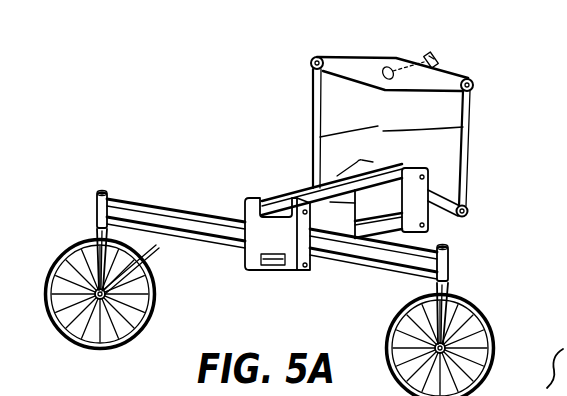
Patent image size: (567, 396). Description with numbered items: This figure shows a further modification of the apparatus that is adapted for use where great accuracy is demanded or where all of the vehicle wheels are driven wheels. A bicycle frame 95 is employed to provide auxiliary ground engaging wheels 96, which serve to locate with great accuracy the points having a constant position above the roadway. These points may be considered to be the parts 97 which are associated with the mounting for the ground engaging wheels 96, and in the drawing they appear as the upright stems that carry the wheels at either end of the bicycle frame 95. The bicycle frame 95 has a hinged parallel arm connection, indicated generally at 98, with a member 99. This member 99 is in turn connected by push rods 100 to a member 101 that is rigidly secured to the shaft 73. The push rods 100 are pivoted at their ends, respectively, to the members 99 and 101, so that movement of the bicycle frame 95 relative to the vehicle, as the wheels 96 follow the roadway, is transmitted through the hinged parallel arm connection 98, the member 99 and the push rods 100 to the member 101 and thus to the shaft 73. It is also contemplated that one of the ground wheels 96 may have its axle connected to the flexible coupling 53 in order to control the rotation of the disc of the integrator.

The flexible coupling 53 is at (150, 254).
The shaft 73 is at (408, 62).
The bicycle frame 95 is at (363, 264).
The auxiliary ground engaging wheels 96 is at (158, 291).
The parts associated with the wheel mounting 97 is at (110, 195).
The hinged parallel arm connection 98 is at (281, 189).
The member 99 is at (438, 206).
The push rods 100 is at (390, 131).
The member 101 is at (447, 82).